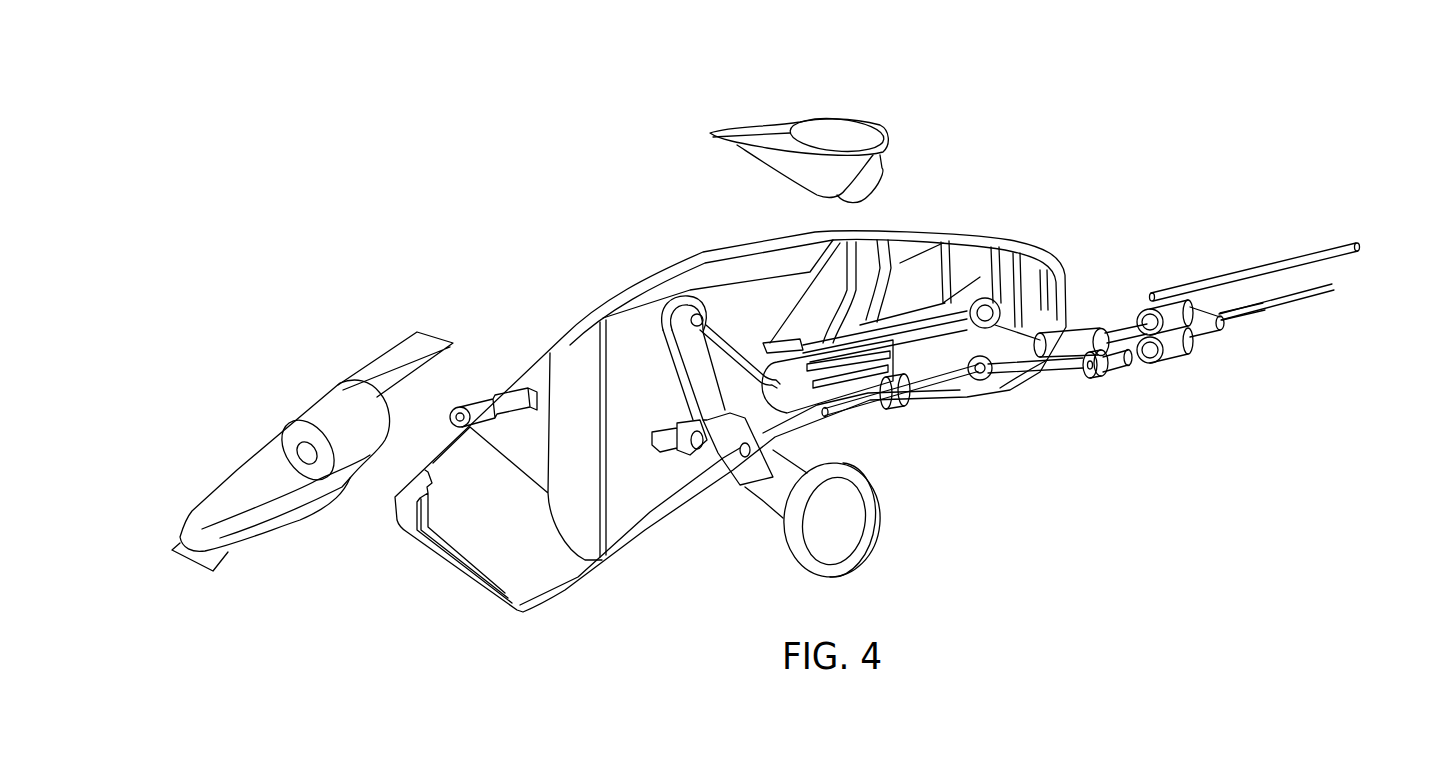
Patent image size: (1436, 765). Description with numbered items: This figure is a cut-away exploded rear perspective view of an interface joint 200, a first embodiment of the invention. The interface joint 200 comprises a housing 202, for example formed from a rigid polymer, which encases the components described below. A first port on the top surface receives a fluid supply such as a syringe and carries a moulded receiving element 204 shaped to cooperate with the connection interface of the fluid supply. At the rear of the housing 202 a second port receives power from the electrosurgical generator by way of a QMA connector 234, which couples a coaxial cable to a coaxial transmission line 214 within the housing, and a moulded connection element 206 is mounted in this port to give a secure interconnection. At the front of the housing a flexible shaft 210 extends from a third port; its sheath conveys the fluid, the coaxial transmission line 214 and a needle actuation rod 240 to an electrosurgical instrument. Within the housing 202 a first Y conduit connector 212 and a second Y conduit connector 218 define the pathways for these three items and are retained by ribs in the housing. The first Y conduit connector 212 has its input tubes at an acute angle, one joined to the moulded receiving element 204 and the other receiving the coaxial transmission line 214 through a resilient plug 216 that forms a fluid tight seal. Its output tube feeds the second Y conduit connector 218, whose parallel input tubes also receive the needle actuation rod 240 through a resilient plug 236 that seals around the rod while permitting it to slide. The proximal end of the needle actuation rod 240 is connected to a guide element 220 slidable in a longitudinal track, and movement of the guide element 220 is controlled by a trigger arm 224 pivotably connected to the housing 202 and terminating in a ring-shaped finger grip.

The interface joint 200 is at (476, 150).
The housing 202 is at (590, 320).
The moulded receiving element 204 is at (810, 148).
The moulded connection element 206 is at (337, 400).
The flexible shaft 210 is at (1287, 262).
The first Y conduit connector 212 is at (1073, 340).
The coaxial transmission line 214 is at (857, 403).
The plug 216 is at (907, 405).
The second Y conduit connector 218 is at (1177, 347).
The guide element 220 is at (770, 343).
The trigger arm 224 is at (780, 490).
The QMA connector 234 is at (510, 400).
The plug 236 is at (1118, 377).
The needle actuation rod 240 is at (1050, 377).